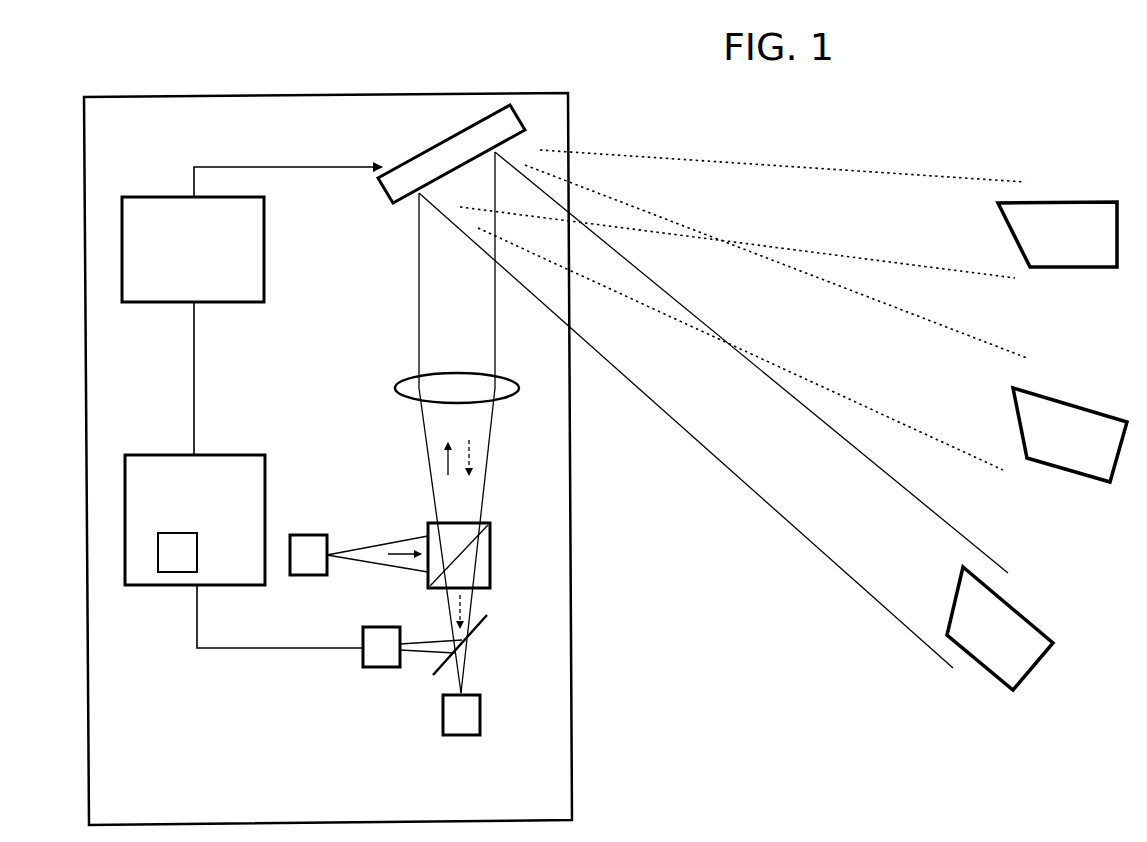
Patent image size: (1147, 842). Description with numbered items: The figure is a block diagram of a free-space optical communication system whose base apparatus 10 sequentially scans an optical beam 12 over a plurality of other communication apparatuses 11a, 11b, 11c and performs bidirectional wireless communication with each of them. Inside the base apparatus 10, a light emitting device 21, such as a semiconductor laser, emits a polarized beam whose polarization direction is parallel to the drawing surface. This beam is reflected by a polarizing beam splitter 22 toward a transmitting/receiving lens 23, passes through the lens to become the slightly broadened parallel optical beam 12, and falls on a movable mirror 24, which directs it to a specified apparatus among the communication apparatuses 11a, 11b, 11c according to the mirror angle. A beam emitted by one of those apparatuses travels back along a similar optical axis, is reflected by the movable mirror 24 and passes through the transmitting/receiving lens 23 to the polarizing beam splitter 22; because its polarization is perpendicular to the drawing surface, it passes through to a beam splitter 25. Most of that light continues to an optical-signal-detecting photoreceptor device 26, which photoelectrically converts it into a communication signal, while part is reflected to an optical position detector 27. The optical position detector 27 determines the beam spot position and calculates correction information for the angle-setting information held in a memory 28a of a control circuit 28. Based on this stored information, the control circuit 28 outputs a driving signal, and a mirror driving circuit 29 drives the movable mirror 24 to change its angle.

The base apparatus 10 is at (572, 702).
The communication apparatus 11a is at (1035, 623).
The communication apparatus 11b is at (1093, 410).
The communication apparatus 11c is at (1090, 208).
The optical beam 12 is at (796, 520).
The light emitting device 21 is at (312, 533).
The polarizing beam splitter 22 is at (490, 558).
The transmitting/receiving lens 23 is at (505, 398).
The movable mirror 24 is at (452, 142).
The beam splitter 25 is at (483, 628).
The optical-signal-detecting photoreceptor device 26 is at (443, 720).
The optical position detector 27 is at (372, 668).
The control circuit 28 is at (125, 497).
The memory 28a is at (178, 572).
The mirror driving circuit 29 is at (122, 243).